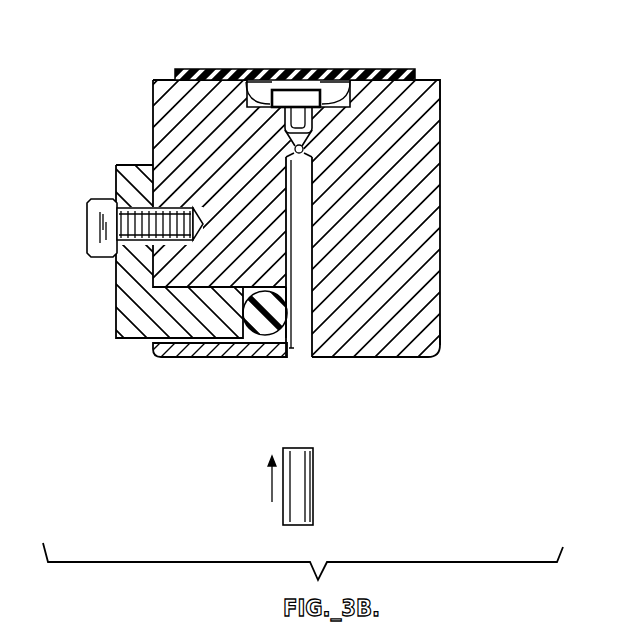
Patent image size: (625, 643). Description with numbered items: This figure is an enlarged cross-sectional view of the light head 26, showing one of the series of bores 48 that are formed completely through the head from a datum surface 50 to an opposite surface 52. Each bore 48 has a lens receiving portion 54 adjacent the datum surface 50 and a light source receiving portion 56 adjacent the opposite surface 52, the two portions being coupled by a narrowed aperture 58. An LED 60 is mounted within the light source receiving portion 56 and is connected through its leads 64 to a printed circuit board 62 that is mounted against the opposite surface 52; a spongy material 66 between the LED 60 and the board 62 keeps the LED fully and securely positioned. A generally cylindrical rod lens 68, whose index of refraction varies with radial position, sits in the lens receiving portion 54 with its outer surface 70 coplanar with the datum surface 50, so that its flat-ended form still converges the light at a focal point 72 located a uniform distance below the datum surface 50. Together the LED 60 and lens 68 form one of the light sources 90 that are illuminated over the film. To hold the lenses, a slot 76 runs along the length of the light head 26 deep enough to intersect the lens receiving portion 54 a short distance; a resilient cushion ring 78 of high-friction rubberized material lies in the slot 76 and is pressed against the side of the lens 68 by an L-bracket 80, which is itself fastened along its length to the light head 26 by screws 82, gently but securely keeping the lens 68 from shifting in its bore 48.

The light head 26 is at (440, 193).
The bore 48 is at (307, 239).
The datum surface 50 is at (388, 358).
The opposite surface 52 is at (428, 80).
The lens receiving portion 54 is at (303, 318).
The light source receiving portion 56 is at (313, 139).
The narrowed aperture 58 is at (307, 154).
The LED 60 is at (300, 121).
The printed circuit board 62 is at (397, 71).
The leads 64 is at (337, 87).
The spongy material 66 is at (312, 82).
The rod lens 68 is at (315, 470).
The outer surface 70 is at (300, 526).
The focal point 72 is at (283, 360).
The slot 76 is at (247, 343).
The resilient cushion ring 78 is at (270, 340).
The L-bracket 80 is at (116, 297).
The screws 82 is at (87, 231).
The light sources 90 is at (372, 517).